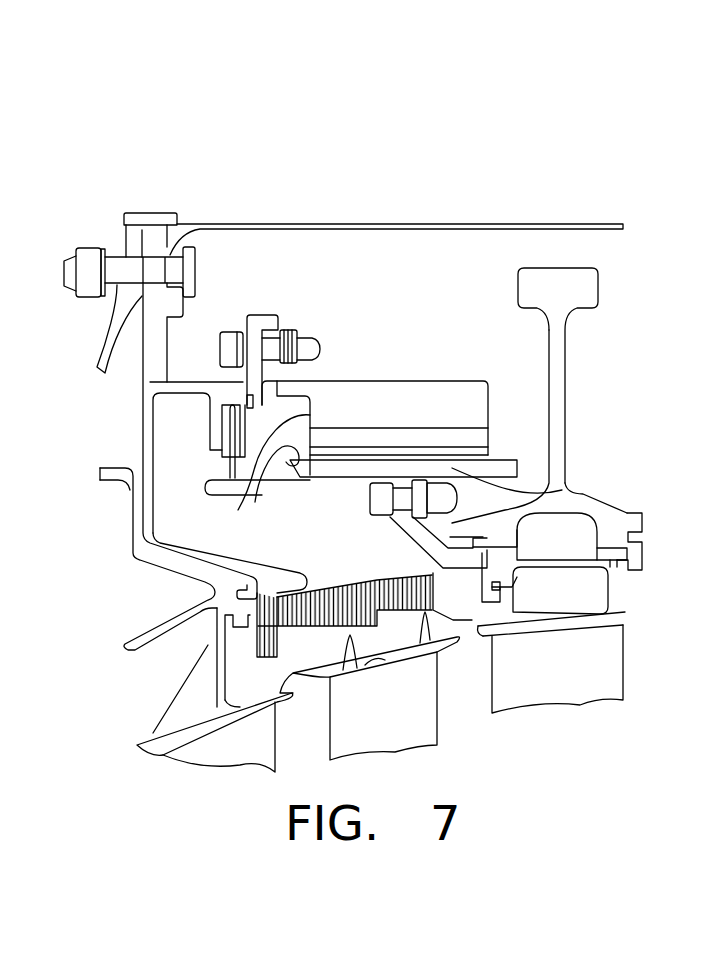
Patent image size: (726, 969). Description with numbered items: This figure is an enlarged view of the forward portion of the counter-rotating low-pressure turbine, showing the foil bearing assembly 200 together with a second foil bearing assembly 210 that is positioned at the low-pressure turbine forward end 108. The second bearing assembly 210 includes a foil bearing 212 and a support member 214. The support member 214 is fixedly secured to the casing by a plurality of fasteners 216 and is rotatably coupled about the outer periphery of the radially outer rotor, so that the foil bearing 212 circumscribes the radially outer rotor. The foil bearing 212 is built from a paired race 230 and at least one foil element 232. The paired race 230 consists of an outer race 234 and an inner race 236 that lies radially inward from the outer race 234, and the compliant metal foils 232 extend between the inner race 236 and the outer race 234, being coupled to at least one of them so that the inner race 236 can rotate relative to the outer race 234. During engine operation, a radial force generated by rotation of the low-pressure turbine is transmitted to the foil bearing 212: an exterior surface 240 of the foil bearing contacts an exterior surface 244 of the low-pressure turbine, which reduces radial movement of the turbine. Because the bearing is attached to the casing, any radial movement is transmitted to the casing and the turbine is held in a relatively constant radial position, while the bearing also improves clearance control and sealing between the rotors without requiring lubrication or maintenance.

The low-pressure turbine forward end 108 is at (202, 195).
The foil bearing assembly 200 is at (445, 192).
The second foil bearing assembly 210 is at (341, 331).
The foil bearing 212 is at (418, 380).
The support member 214 is at (272, 312).
The fasteners 216 is at (222, 348).
The paired race 230 is at (248, 481).
The foil element 232 is at (487, 440).
The outer race 234 is at (487, 395).
The inner race 236 is at (363, 453).
The exterior surface of foil bearing 240 is at (548, 500).
The exterior surface of low-pressure turbine 244 is at (300, 475).